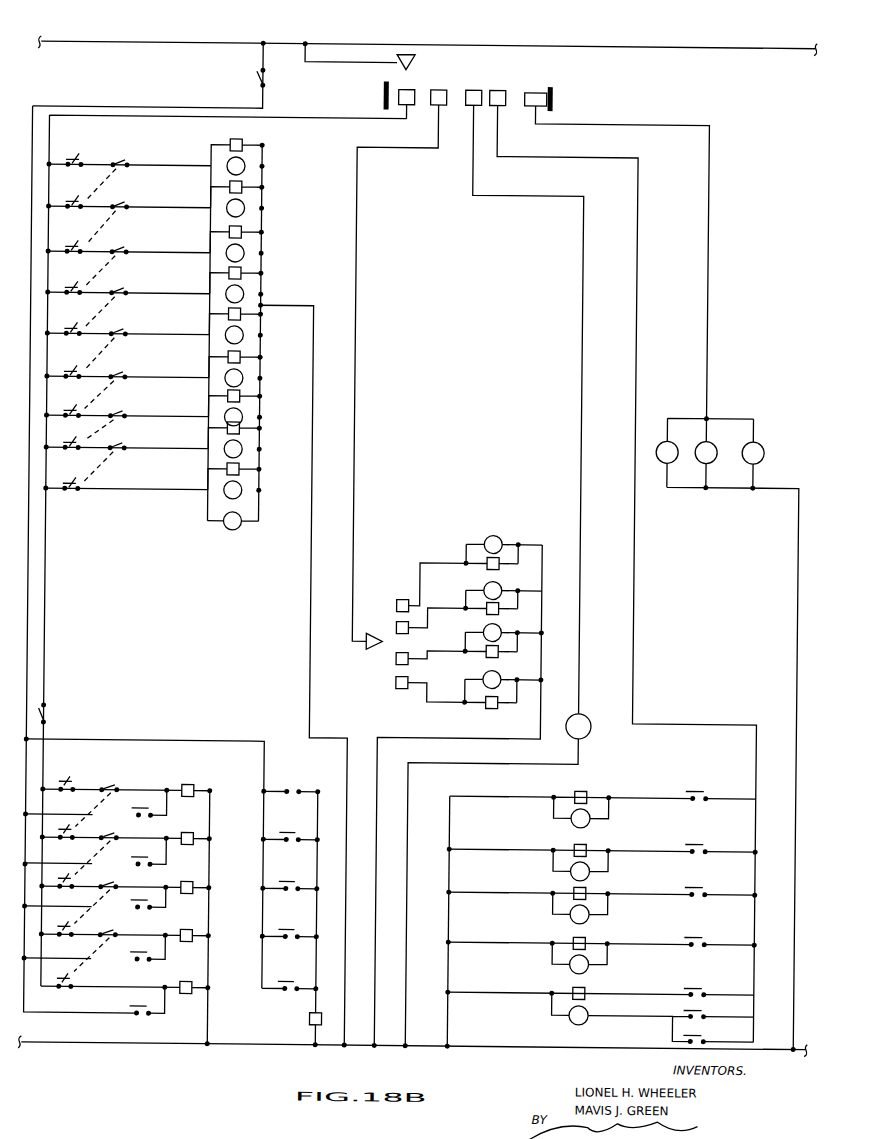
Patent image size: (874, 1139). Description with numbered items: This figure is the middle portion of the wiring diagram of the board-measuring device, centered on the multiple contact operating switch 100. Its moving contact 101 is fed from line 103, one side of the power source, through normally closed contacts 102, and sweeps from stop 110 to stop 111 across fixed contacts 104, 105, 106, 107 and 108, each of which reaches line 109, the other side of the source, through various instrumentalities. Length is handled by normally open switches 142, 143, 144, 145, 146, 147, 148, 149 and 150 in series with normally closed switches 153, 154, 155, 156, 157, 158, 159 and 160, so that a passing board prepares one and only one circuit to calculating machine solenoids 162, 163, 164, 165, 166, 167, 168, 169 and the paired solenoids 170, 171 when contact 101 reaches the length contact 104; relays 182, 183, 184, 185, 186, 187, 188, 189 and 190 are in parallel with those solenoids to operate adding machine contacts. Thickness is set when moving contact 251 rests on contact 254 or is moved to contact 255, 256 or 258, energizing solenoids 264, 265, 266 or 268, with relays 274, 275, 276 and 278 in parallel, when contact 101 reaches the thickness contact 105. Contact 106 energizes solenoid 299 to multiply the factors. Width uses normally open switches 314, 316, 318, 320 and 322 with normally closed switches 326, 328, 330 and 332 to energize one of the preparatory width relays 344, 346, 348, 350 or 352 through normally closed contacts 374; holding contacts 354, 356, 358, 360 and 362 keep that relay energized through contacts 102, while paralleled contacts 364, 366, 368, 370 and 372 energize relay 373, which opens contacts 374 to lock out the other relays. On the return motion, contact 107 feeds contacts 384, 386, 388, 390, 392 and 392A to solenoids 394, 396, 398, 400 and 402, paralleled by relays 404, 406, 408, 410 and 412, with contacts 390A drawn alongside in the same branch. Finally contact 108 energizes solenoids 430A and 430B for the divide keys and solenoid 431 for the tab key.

The multiple contact operating switch 100 is at (468, 88).
The moving contact 101 is at (392, 64).
The normally closed contacts 102 is at (256, 86).
The line 103 is at (147, 40).
The fixed contact (length contact) 104 is at (403, 90).
The fixed contact (thickness contact) 105 is at (435, 90).
The fixed contact 106 is at (470, 90).
The fixed contact (width contact) 107 is at (498, 90).
The fixed contact 108 is at (535, 92).
The line 109 is at (412, 1056).
The stop 110 is at (549, 97).
The stop 111 is at (378, 98).
The normally open switch 142 is at (75, 162).
The normally open switch 143 is at (75, 204).
The normally open switch 144 is at (75, 249).
The normally open switch 145 is at (75, 290).
The normally open switch 146 is at (75, 331).
The normally open switch 147 is at (75, 374).
The normally open switch 148 is at (75, 413).
The normally open switch 149 is at (75, 445).
The normally open switch 150 is at (75, 486).
The normally closed switch 153 is at (120, 165).
The normally closed switch 154 is at (120, 207).
The normally closed switch 155 is at (120, 252).
The normally closed switch 156 is at (120, 293).
The normally closed switch 157 is at (120, 334).
The normally closed switch 158 is at (120, 377).
The normally closed switch 159 is at (120, 416).
The normally closed switch 160 is at (120, 448).
The solenoid 162 is at (223, 171).
The solenoid 163 is at (223, 213).
The solenoid 164 is at (223, 258).
The solenoid 165 is at (223, 299).
The solenoid 166 is at (223, 341).
The solenoid 167 is at (223, 384).
The solenoid 168 is at (223, 424).
The solenoid 169 is at (223, 455).
The solenoid 170 is at (223, 495).
The solenoid 171 is at (232, 531).
The relay 182 is at (239, 144).
The relay 183 is at (239, 186).
The relay 184 is at (239, 231).
The relay 185 is at (259, 268).
The relay 186 is at (240, 320).
The relay 187 is at (239, 356).
The relay 188 is at (239, 396).
The relay 189 is at (239, 431).
The relay 190 is at (239, 466).
The moving contact 251 is at (378, 650).
The relatively fixed contact 254 is at (398, 599).
The relatively fixed contact 255 is at (401, 622).
The relatively fixed contact 256 is at (406, 653).
The relatively fixed contact 258 is at (398, 683).
The solenoid 264 is at (494, 535).
The solenoid 265 is at (487, 588).
The solenoid 266 is at (484, 626).
The solenoid 268 is at (484, 672).
The relay 274 is at (498, 567).
The relay 275 is at (498, 614).
The relay 276 is at (496, 657).
The relay 278 is at (494, 708).
The solenoid 299 is at (583, 734).
The normally open switch 314 is at (74, 774).
The normally open switch 316 is at (74, 822).
The normally open switch 318 is at (74, 871).
The normally open switch 320 is at (74, 919).
The normally open switch 322 is at (74, 971).
The normally closed switch 326 is at (117, 777).
The normally closed switch 328 is at (117, 825).
The normally closed switch 330 is at (118, 885).
The normally closed switch 332 is at (120, 931).
The preparatory width relay 344 is at (191, 787).
The preparatory width relay 346 is at (195, 835).
The preparatory width relay 348 is at (195, 884).
The preparatory width relay 350 is at (174, 928).
The preparatory width relay 352 is at (190, 983).
The normally open contacts 354 is at (150, 802).
The normally open contacts 356 is at (150, 851).
The normally open contacts 358 is at (150, 895).
The normally open contacts 360 is at (150, 946).
The normally open contacts 362 is at (148, 1000).
The normally open contacts 364 is at (291, 776).
The normally open contacts 366 is at (298, 833).
The normally open contacts 368 is at (298, 885).
The normally open contacts 370 is at (298, 931).
The normally open contacts 372 is at (298, 983).
The relay 373 is at (314, 1014).
The normally closed contacts 374 is at (47, 723).
The normally open contacts 384 is at (693, 779).
The normally open contacts 386 is at (693, 832).
The normally open contacts 388 is at (693, 875).
The normally open contacts 390 is at (693, 925).
The contact 390A is at (700, 1027).
The normally open contacts 392 is at (699, 1003).
The normally open contacts 392A is at (693, 977).
The solenoid 394 is at (575, 823).
The solenoid 396 is at (575, 876).
The solenoid 398 is at (575, 919).
The solenoid 400 is at (575, 969).
The solenoid 402 is at (575, 1021).
The relay 404 is at (583, 777).
The relay 406 is at (583, 830).
The relay 408 is at (583, 873).
The relay 410 is at (583, 923).
The relay 412 is at (583, 973).
The solenoid 430A is at (656, 452).
The solenoid 430B is at (716, 440).
The solenoid 431 is at (764, 450).